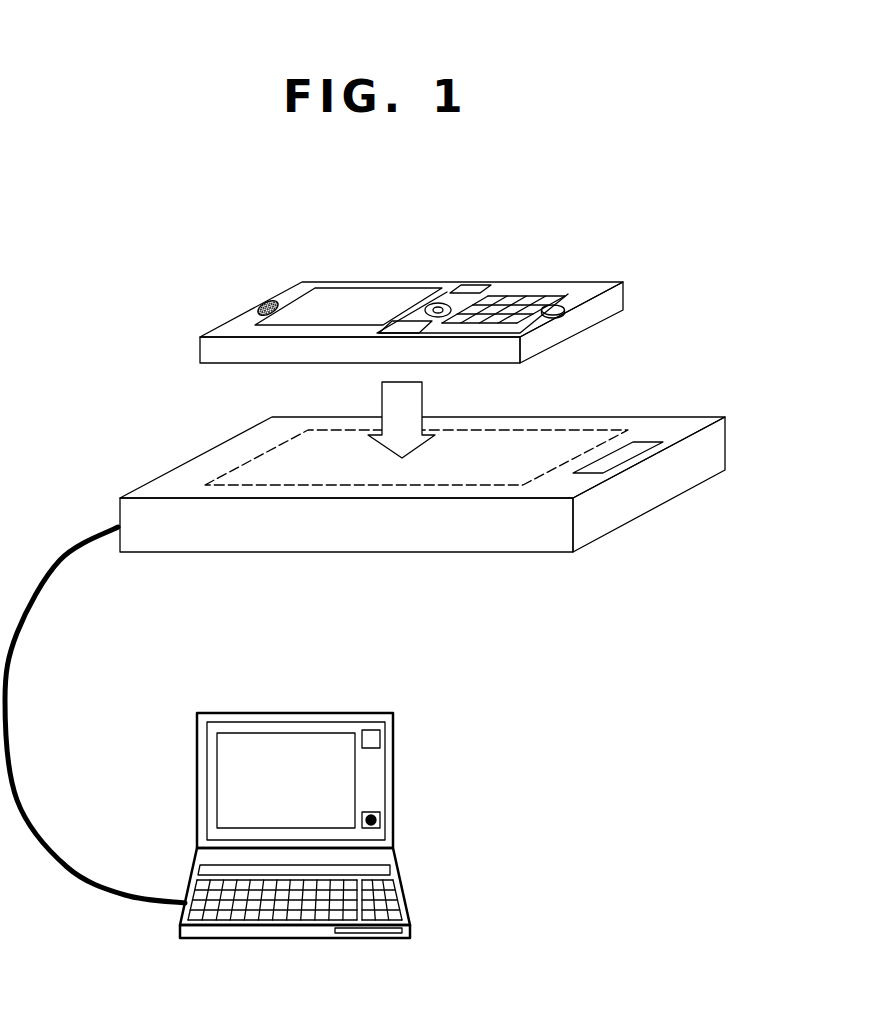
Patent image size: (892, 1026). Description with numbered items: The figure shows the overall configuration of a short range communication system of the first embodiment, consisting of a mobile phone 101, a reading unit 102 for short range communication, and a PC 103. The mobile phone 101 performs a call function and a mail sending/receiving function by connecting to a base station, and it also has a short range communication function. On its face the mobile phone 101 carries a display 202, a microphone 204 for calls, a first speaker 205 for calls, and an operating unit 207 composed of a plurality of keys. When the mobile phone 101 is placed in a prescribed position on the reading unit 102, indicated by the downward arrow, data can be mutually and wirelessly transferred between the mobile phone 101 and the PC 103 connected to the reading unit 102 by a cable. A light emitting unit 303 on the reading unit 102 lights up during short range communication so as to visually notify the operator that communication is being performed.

The mobile phone 101 is at (598, 282).
The reading unit 102 is at (667, 417).
The PC 103 is at (395, 779).
The display 202 is at (363, 307).
The microphone for calls 204 is at (553, 304).
The first speaker for calls 205 is at (273, 305).
The operating unit 207 is at (498, 310).
The light emitting unit 303 is at (620, 458).